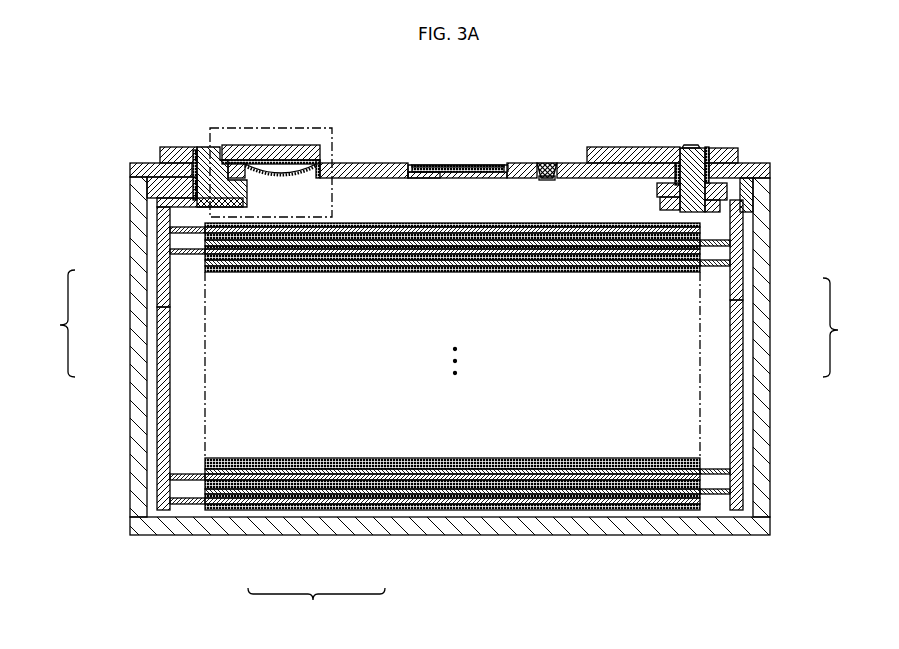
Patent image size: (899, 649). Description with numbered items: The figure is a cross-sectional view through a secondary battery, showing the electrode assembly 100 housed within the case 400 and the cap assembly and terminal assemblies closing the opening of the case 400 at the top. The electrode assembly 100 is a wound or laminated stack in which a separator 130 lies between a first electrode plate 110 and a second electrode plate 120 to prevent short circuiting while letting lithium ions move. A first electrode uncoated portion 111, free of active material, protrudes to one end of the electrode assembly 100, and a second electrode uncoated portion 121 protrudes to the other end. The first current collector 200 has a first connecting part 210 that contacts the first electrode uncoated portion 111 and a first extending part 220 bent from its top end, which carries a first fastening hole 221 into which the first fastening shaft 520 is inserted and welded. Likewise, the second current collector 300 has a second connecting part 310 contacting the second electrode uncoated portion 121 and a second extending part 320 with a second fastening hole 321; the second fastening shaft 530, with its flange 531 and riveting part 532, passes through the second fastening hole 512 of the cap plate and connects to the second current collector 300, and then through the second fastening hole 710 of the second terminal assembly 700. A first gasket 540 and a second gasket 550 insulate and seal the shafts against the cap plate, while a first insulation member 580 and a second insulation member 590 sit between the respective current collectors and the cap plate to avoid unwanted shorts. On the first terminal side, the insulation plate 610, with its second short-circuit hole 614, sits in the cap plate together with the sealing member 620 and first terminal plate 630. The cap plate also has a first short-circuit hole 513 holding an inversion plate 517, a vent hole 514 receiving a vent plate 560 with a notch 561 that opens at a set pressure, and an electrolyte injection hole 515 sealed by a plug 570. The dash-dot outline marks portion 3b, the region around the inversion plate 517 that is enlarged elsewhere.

The electrode assembly 100 is at (450, 424).
The first electrode plate 110 is at (257, 510).
The first electrode uncoated portion 111 is at (190, 504).
The second electrode plate 120 is at (368, 490).
The second electrode uncoated portion 121 is at (712, 474).
The separator 130 is at (314, 494).
The first current collector 200 is at (134, 354).
The first connecting part 210 is at (162, 371).
The first extending part 220 is at (155, 212).
The first fastening hole 221 is at (133, 171).
The second current collector 300 is at (804, 355).
The second connecting part 310 is at (740, 368).
The second extending part 320 is at (745, 215).
The second fastening hole 321 is at (663, 204).
The case 400 is at (762, 437).
The second fastening hole 512 is at (716, 150).
The first short-circuit hole 513 is at (293, 174).
The vent hole 514 is at (435, 176).
The electrolyte injection hole 515 is at (543, 180).
The inversion plate 517 is at (266, 173).
The first fastening shaft 520 is at (203, 149).
The second fastening shaft 530 is at (695, 148).
The flange 531 is at (662, 191).
The riveting part 532 is at (685, 148).
The first gasket 540 is at (222, 150).
The second gasket 550 is at (677, 180).
The vent plate 560 is at (502, 165).
The notch 561 is at (445, 166).
The plug 570 is at (546, 163).
The first insulation member 580 is at (146, 190).
The second insulation member 590 is at (748, 180).
The insulation plate 610 is at (306, 156).
The second short-circuit hole 614 is at (280, 147).
The sealing member 620 is at (243, 148).
The first terminal plate 630 is at (307, 147).
The second terminal assembly 700 is at (596, 147).
The second fastening hole 710 is at (704, 148).
The portion 3b is at (319, 163).